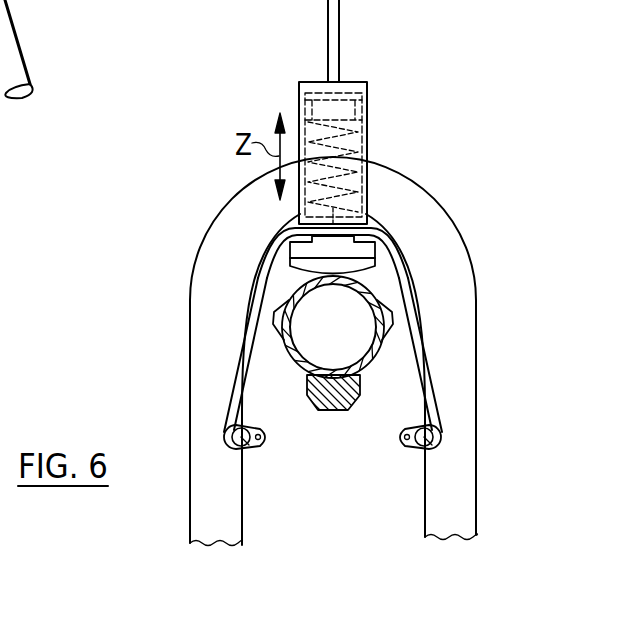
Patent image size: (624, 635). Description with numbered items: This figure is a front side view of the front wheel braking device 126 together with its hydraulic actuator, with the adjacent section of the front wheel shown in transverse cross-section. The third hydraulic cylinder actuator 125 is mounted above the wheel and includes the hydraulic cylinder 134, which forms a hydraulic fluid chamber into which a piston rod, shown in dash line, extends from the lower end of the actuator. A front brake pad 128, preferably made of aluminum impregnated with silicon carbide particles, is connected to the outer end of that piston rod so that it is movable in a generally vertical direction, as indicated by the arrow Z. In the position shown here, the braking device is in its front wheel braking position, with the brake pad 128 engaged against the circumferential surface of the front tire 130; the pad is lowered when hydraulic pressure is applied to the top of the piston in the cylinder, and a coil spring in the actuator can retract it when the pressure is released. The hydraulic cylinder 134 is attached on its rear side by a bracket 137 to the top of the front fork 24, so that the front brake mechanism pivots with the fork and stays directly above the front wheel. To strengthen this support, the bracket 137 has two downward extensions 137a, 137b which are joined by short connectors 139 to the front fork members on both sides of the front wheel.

The front fork 24 is at (210, 253).
The third hydraulic cylinder actuator 125 is at (368, 124).
The front wheel braking device 126 is at (377, 248).
The front brake pad 128 is at (372, 257).
The front tire 130 is at (284, 360).
The hydraulic cylinder 134 is at (299, 97).
The bracket 137 is at (395, 232).
The downward extension 137a is at (242, 357).
The downward extension 137b is at (412, 356).
The short connectors 139 is at (246, 449).